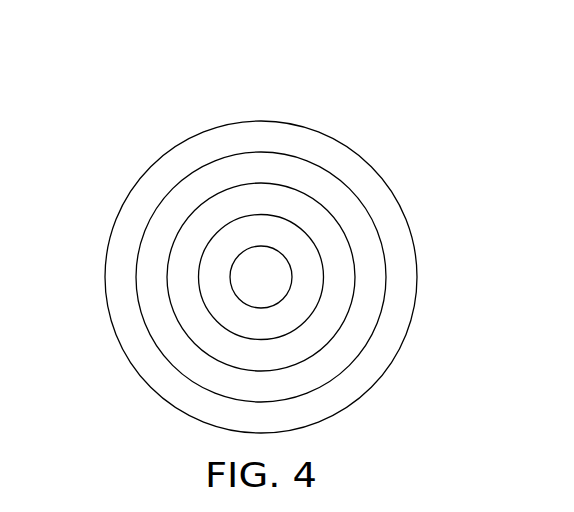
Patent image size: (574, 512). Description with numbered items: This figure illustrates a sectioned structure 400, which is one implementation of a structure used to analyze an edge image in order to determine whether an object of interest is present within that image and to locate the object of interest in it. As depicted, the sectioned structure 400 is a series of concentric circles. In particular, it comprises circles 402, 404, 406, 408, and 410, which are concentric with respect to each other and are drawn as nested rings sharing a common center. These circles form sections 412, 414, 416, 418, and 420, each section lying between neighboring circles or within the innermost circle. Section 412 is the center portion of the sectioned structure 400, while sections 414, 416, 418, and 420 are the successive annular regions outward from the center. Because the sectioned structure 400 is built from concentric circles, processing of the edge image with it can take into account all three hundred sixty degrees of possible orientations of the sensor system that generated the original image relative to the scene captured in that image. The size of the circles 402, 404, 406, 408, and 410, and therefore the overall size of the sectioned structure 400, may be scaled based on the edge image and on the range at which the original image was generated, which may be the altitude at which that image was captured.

The sectioned structure 400 is at (404, 76).
The circle 402 is at (238, 255).
The circle 404 is at (308, 233).
The circle 406 is at (232, 185).
The circle 408 is at (312, 162).
The circle 410 is at (262, 121).
The section 412 is at (246, 290).
The section 414 is at (300, 309).
The section 416 is at (234, 356).
The section 418 is at (307, 383).
The section 420 is at (113, 273).